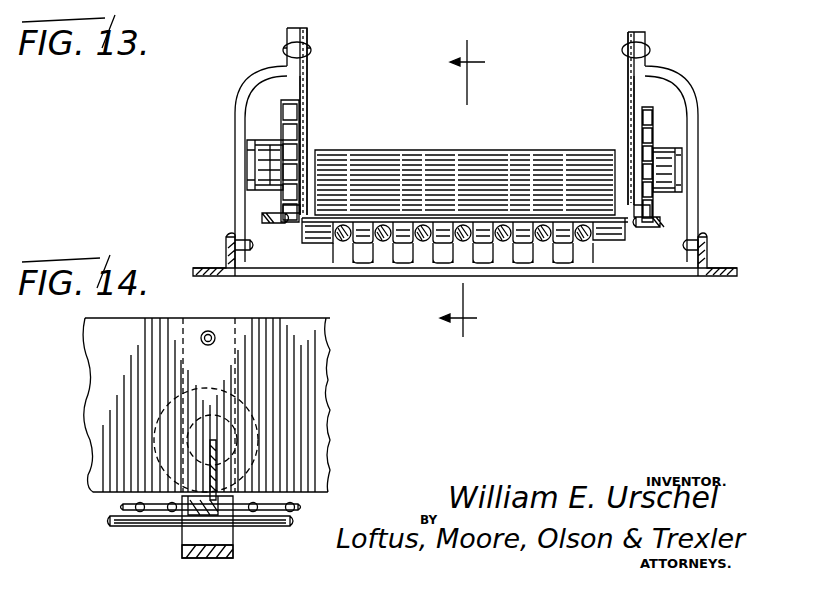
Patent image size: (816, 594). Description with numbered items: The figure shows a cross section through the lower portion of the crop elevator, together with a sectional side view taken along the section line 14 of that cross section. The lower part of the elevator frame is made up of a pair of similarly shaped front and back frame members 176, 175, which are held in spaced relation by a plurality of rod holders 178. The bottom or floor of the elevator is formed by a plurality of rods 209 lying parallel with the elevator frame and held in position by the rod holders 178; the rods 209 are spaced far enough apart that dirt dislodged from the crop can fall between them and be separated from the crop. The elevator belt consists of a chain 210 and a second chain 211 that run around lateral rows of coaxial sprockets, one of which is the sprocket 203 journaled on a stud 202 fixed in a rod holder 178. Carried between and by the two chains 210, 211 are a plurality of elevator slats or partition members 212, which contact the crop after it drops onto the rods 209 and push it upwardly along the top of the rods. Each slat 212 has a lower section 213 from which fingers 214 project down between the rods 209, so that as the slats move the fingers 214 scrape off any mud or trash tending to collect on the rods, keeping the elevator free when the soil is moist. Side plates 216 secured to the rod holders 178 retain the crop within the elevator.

In FIG. 13, the section line 14— 14 is at (475, 188).
In FIG. 13, the back elevator frame member 175 is at (724, 268).
In FIG. 13, the front elevator frame member 176 is at (208, 265).
In FIG. 13, the rod holder 178 is at (319, 270).
In FIG. 14, the rod holder 178 is at (182, 552).
In FIG. 13, the stud 202 is at (684, 166).
In FIG. 13, the sprocket 203 is at (656, 118).
In FIG. 13, the rod 209 is at (378, 243).
In FIG. 14, the rod 209 is at (110, 522).
In FIG. 13, the chain 210 is at (652, 230).
In FIG. 13, the chain 211 is at (262, 218).
In FIG. 14, the chain 211 is at (123, 507).
In FIG. 13, the elevator slat 212 is at (501, 160).
In FIG. 14, the elevator slat 212 is at (216, 484).
In FIG. 13, the lower section 213 is at (566, 226).
In FIG. 13, the finger 214 is at (446, 245).
In FIG. 14, the finger 214 is at (222, 536).
In FIG. 13, the side plate 216 is at (307, 84).
In FIG. 14, the side plate 216 is at (100, 363).